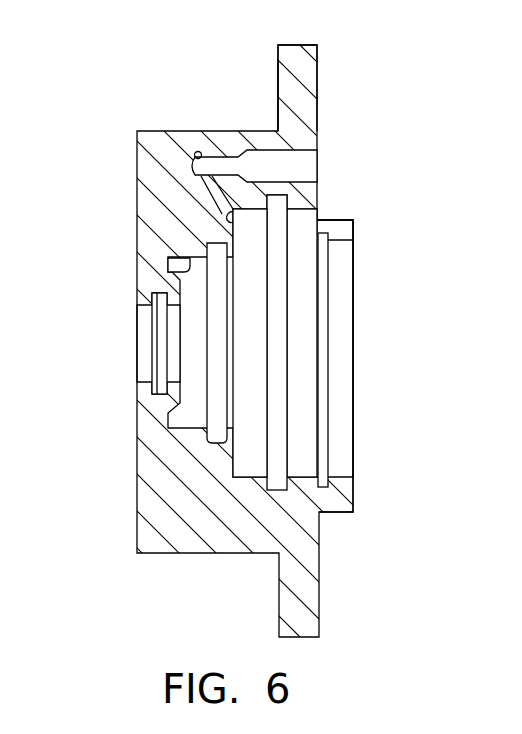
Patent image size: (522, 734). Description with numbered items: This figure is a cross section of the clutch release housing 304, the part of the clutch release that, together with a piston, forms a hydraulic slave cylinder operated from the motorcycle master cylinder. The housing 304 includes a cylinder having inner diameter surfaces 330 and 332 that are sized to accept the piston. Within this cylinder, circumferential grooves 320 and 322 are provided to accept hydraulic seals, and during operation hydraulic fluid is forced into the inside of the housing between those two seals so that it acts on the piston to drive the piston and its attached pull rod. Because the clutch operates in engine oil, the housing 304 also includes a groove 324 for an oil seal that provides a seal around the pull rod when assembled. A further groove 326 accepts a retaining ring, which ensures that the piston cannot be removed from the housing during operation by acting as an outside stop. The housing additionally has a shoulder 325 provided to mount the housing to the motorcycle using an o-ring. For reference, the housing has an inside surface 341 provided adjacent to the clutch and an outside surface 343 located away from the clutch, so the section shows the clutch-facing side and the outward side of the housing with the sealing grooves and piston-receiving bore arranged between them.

The housing 304 is at (300, 50).
The shoulder 325 is at (278, 82).
The inside surface 341 is at (137, 192).
The circumferential groove 320 is at (288, 206).
The outside surface 343 is at (353, 228).
The inner diameter surface 330 is at (253, 209).
The inner diameter surface 332 is at (168, 268).
The groove 324 is at (154, 308).
The circumferential groove 322 is at (222, 428).
The groove 326 is at (328, 480).